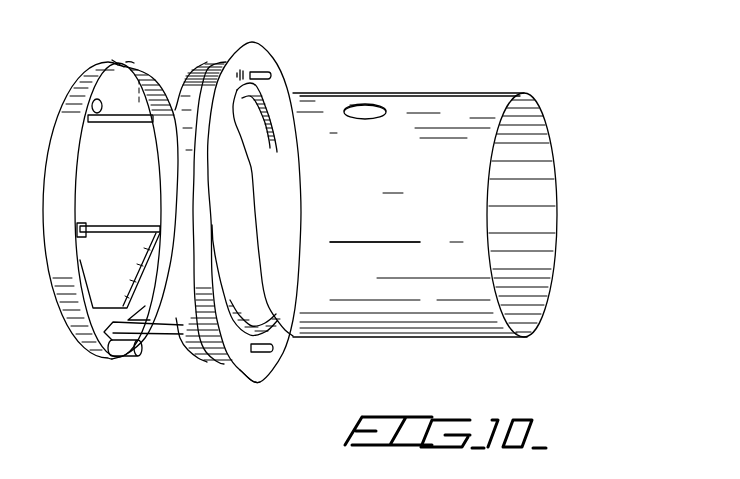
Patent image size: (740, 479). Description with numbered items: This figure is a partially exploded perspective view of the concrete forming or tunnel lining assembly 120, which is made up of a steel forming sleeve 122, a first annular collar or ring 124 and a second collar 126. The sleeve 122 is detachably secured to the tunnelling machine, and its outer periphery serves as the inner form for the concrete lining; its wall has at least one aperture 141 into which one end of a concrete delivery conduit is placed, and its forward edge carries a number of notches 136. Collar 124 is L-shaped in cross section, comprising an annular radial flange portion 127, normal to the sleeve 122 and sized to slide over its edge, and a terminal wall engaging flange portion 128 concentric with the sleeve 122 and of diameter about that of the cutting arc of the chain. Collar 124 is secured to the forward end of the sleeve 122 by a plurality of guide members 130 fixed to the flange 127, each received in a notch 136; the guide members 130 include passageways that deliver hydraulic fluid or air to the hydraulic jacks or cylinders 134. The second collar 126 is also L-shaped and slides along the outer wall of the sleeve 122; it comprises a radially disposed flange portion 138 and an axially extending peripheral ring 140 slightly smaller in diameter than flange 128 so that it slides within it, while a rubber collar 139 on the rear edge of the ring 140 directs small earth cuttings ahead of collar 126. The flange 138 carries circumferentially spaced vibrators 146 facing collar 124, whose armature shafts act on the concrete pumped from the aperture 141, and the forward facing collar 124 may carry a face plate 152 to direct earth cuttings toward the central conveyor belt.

The concrete forming or tunnel lining assembly 120 is at (344, 47).
The steel forming sleeve 122 is at (543, 95).
The first annular collar or ring 124 is at (60, 113).
The second collar 126 is at (258, 135).
The annular radial surface or flange portion 127 is at (118, 64).
The terminal wall engaging flange portion 128 is at (130, 61).
The guide members 130 is at (106, 122).
The hydraulic jacks or cylinders 134 is at (85, 222).
The notches 136 is at (353, 207).
The radially disposed surface or flange portion 138 is at (268, 98).
The rubber collar 139 is at (243, 373).
The axially extending peripheral flange or ring 140 is at (203, 62).
The aperture 141 is at (365, 106).
The vibrators 146 is at (266, 70).
The face plate 152 is at (142, 291).